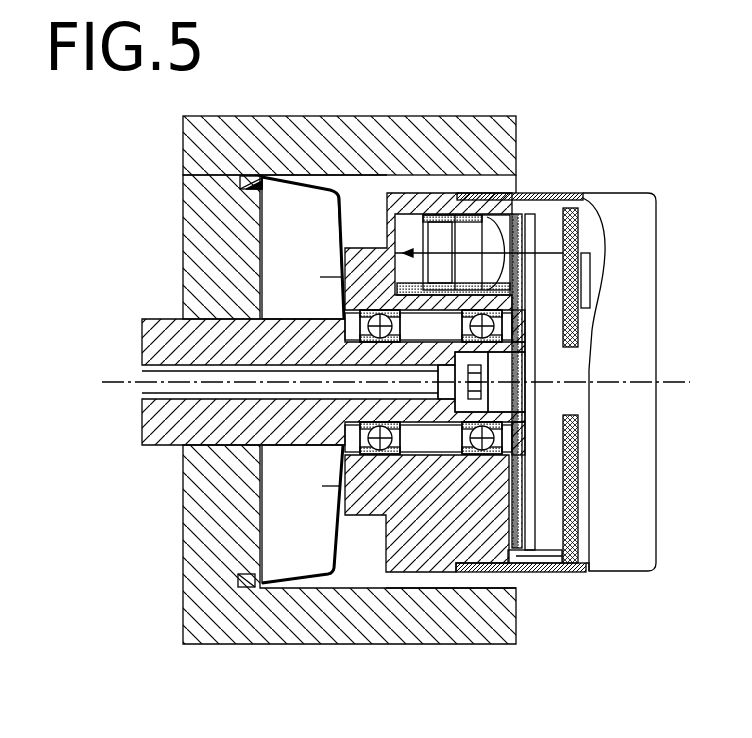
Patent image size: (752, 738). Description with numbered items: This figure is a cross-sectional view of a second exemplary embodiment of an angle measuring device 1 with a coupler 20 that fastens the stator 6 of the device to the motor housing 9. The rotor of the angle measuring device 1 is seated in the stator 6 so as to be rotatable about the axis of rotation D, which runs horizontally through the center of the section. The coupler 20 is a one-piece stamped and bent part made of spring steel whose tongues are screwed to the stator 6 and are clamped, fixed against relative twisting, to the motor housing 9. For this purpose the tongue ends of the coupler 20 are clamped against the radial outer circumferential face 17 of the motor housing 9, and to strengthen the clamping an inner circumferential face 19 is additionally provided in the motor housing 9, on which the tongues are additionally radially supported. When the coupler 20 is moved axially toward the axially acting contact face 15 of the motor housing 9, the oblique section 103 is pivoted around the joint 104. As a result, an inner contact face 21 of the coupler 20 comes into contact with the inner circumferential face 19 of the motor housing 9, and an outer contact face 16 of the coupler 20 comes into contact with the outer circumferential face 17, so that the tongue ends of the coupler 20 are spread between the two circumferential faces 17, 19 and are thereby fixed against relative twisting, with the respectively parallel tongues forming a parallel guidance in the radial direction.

The angle measuring device 1 is at (628, 208).
The stator 6 is at (535, 572).
The motor housing 9 is at (518, 128).
The axially acting contact face 15 is at (247, 180).
The outer contact face 16 is at (262, 175).
The outer circumferential face 17 is at (506, 579).
The inner circumferential face 19 is at (262, 583).
The coupler 20 is at (335, 222).
The inner contact face 21 is at (252, 178).
The oblique section 103 is at (254, 586).
The joint 104 is at (265, 588).
The axis of rotation D is at (122, 378).